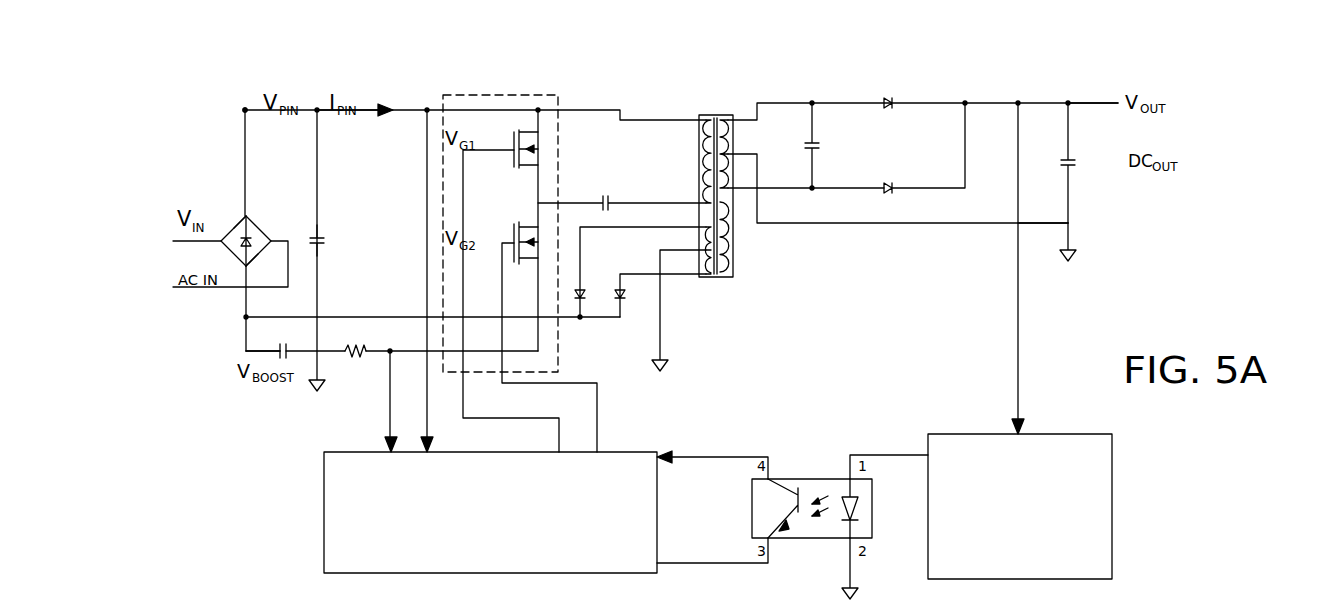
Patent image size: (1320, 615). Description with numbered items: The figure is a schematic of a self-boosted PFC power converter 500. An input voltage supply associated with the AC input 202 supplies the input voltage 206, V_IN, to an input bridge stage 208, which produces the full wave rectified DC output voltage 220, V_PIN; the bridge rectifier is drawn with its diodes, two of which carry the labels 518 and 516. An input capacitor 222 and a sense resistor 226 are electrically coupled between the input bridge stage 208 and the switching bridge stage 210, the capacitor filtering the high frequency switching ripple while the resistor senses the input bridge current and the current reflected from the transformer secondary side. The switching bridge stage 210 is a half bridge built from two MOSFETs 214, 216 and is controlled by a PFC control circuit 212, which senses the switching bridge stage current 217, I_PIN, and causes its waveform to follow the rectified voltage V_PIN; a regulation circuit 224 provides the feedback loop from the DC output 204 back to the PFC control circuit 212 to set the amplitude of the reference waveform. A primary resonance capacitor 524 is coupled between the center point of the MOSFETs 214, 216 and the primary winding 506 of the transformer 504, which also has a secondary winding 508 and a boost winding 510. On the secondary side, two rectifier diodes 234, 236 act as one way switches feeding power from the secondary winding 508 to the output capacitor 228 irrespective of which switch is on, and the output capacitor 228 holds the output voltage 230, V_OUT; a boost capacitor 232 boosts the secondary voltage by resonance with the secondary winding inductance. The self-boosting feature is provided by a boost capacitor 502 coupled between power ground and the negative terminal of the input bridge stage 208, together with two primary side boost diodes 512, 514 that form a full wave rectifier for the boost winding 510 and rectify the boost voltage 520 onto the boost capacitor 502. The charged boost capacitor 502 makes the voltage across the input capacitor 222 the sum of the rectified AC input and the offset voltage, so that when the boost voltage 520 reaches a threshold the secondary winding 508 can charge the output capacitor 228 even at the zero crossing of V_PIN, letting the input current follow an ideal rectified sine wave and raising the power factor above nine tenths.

The self-boosted PFC power converter 500 is at (176, 111).
The AC input 202 is at (200, 274).
The DC output 204 is at (1142, 150).
The input voltage 206 is at (188, 206).
The input bridge stage 208 is at (264, 226).
The switching bridge stage 210 is at (558, 95).
The PFC control circuit 212 is at (490, 512).
The MOSFET 214 is at (514, 135).
The MOSFET 216 is at (514, 228).
The switching bridge stage current 217 is at (345, 92).
The rectified input bridge stage voltage 220 is at (267, 90).
The input capacitor 222 is at (324, 240).
The regulation circuit 224 is at (1020, 506).
The sense resistor 226 is at (355, 345).
The output capacitor 228 is at (1063, 160).
The output voltage 230 is at (1135, 93).
The boost capacitor 232 is at (817, 143).
The diode 234 is at (893, 104).
The diode 236 is at (893, 189).
The boost capacitor 502 is at (283, 345).
The transformer 504 is at (716, 114).
The primary winding 506 is at (702, 150).
The secondary winding 508 is at (733, 247).
The boost winding 510 is at (705, 278).
The primary side boost diode 512 is at (582, 290).
The primary side boost diode 514 is at (621, 299).
The bridge diode 516 is at (250, 265).
The bridge diode 518 is at (256, 216).
The boost voltage 520 is at (250, 389).
The primary resonance capacitor 524 is at (608, 200).